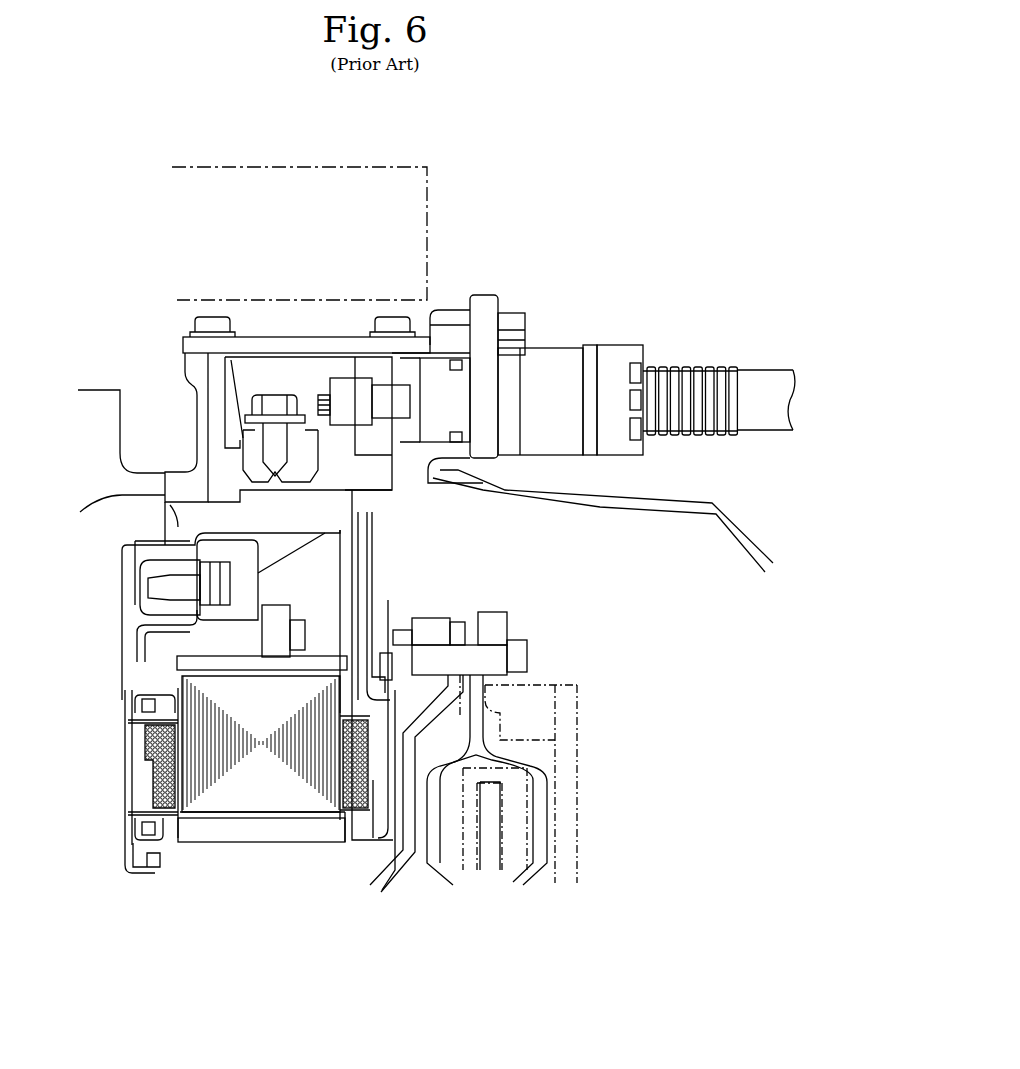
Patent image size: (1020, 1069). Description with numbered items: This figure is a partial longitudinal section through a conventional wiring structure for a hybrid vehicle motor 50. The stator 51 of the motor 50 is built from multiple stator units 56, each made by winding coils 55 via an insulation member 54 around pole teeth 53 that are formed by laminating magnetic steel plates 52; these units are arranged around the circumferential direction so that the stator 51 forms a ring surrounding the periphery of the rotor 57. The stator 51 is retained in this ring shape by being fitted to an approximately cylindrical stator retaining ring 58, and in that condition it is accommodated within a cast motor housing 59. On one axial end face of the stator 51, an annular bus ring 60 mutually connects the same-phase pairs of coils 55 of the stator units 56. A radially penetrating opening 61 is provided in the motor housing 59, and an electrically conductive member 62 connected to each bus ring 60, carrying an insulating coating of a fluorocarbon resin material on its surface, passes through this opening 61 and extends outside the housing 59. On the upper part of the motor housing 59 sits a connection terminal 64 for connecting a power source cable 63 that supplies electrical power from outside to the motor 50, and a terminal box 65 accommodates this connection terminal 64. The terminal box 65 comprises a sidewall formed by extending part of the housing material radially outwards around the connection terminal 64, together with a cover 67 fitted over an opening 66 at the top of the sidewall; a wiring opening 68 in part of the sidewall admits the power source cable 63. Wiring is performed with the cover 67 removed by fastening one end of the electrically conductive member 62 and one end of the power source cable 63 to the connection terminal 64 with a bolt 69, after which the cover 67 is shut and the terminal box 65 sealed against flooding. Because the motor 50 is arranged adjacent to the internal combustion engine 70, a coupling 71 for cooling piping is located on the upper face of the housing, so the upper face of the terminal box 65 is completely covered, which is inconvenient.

The hybrid vehicle motor 50 is at (235, 928).
The stator 51 is at (308, 656).
The magnetic steel plates 52 is at (213, 783).
The pole teeth 53 is at (227, 818).
The insulation member 54 is at (345, 830).
The coils 55 is at (153, 767).
The stator units 56 is at (112, 793).
The rotor 57 is at (167, 872).
The stator retaining ring 58 is at (336, 637).
The motor housing 59 is at (188, 483).
The bus ring 60 is at (137, 645).
The opening 61 is at (330, 496).
The electrically conductive member 62 is at (270, 535).
The power source cable 63 is at (700, 367).
The connection terminal 64 is at (299, 392).
The terminal box 65 is at (188, 367).
The opening 66 is at (222, 388).
The cover 67 is at (271, 340).
The wiring opening 68 is at (450, 380).
The bolt 69 is at (270, 397).
The internal combustion engine 70 is at (78, 379).
The coupling 71 is at (335, 165).